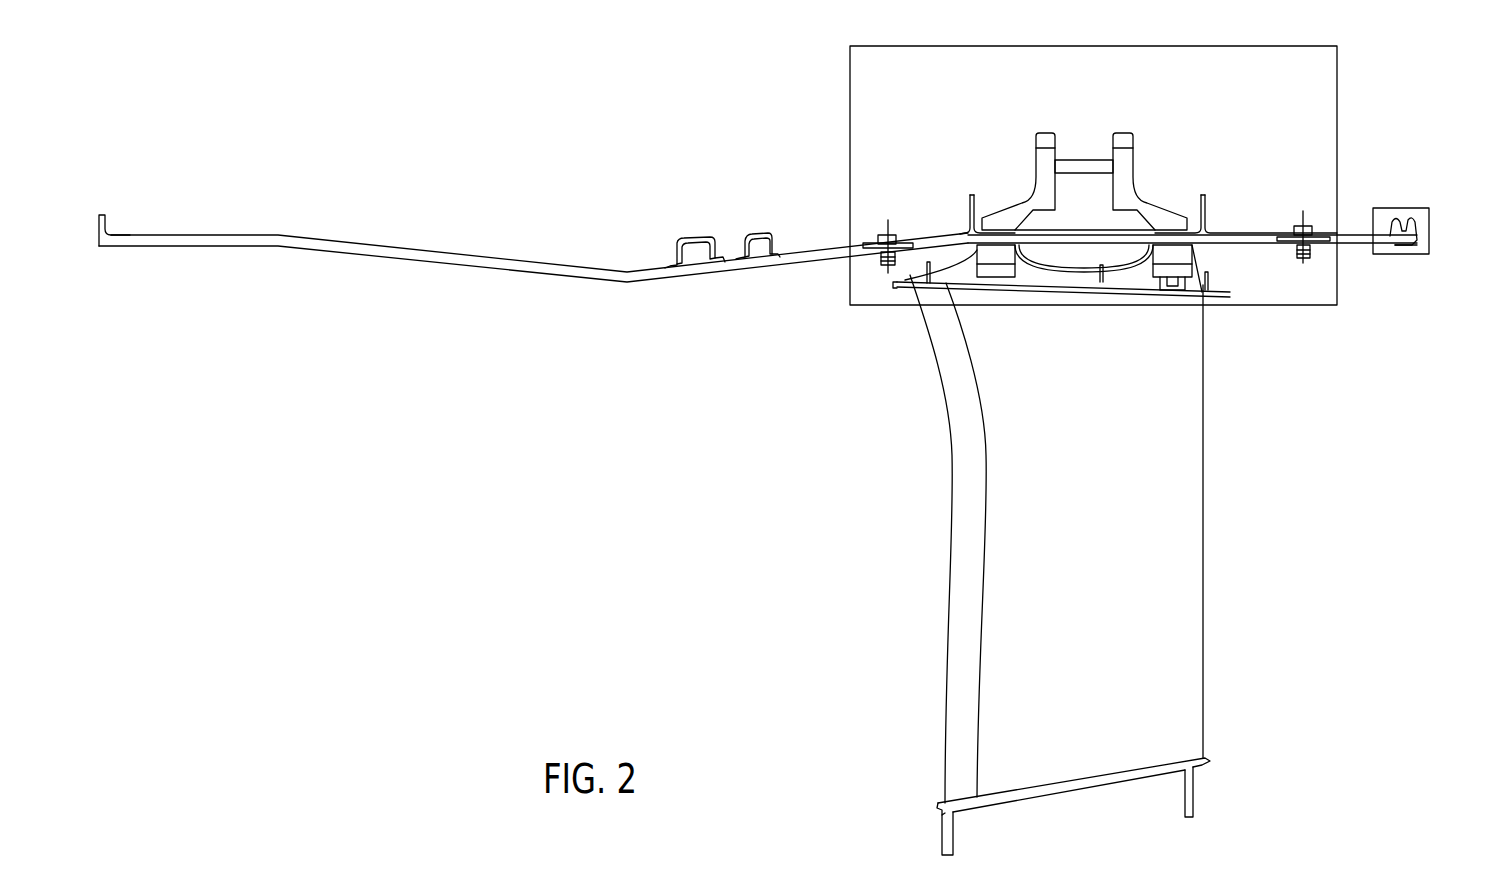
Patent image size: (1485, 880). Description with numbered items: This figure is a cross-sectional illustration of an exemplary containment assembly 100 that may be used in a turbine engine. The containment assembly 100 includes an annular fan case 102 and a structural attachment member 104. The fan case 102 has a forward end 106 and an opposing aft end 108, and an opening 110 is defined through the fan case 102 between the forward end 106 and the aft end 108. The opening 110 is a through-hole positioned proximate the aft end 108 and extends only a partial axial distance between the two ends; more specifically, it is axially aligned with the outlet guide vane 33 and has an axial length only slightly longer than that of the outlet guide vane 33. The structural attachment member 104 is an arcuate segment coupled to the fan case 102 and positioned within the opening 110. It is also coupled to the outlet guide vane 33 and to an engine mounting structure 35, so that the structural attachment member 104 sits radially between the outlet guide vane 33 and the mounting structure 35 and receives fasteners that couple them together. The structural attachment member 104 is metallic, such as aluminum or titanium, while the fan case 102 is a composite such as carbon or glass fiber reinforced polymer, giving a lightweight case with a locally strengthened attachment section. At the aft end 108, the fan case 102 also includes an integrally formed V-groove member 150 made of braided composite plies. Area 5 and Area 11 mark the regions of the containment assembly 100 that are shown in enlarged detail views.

The containment assembly 100 is at (282, 113).
The Area 5 is at (1338, 90).
The forward end 106 is at (103, 213).
The fan case 102 is at (495, 263).
The structural attachment member 104 is at (1243, 247).
The engine mounting structure 35 is at (1125, 182).
The opening 110 is at (1244, 208).
The Area 11 is at (1410, 210).
The aft end 108 is at (1390, 232).
The V-groove member 150 is at (1403, 243).
The outlet guide vane 33 is at (1177, 573).